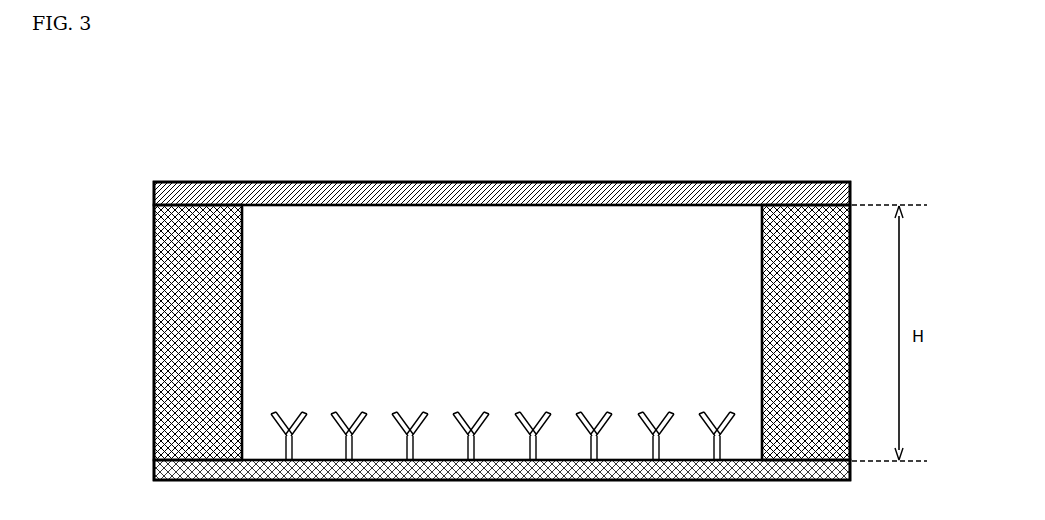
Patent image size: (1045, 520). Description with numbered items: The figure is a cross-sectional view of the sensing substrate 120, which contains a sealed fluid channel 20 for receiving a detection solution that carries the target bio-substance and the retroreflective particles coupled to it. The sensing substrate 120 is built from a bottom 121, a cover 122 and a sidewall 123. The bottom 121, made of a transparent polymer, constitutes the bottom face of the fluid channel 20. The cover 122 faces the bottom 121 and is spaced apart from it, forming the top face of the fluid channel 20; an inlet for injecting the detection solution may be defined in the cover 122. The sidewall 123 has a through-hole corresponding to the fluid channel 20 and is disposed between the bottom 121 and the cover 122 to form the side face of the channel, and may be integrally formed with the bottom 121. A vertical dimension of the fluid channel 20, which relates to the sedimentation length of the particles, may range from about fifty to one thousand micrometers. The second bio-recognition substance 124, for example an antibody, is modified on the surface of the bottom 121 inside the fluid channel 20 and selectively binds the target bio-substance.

The sensing substrate 120 is at (526, 97).
The cover 122 is at (154, 195).
The sidewall 123 is at (154, 340).
The bottom 121 is at (154, 470).
The fluid channel 20 is at (372, 269).
The second bio-recognition substance 124 is at (647, 408).